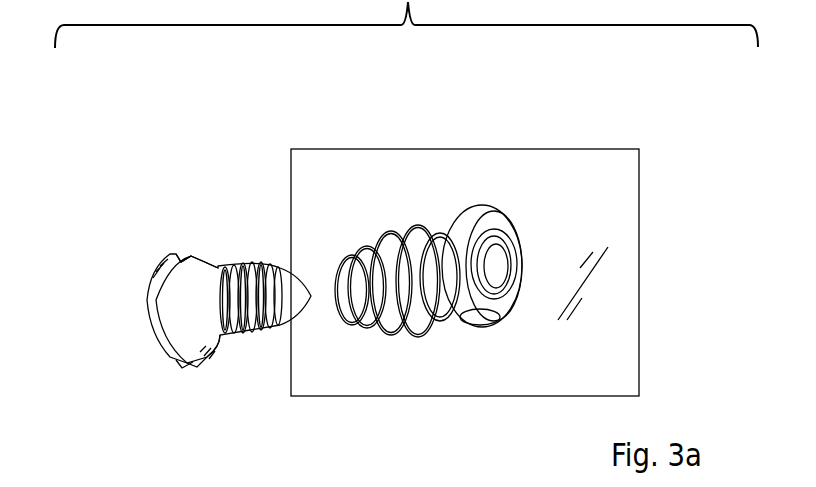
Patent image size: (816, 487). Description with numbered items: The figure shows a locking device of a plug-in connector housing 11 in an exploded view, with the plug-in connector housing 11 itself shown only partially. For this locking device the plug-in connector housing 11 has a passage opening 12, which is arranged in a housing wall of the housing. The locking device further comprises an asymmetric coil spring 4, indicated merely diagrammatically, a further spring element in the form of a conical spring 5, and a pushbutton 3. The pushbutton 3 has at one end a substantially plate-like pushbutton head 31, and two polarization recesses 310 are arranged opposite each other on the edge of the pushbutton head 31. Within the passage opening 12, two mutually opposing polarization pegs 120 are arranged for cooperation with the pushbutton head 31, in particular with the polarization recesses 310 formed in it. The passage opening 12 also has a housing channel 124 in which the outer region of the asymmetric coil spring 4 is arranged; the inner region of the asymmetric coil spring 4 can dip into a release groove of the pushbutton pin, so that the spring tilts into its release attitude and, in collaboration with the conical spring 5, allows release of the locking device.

The pushbutton 3 is at (181, 271).
The pushbutton head 31 is at (162, 318).
The polarization recesses 310 is at (188, 262).
The plug-in connector housing 11 is at (310, 195).
The conical spring 5 is at (372, 237).
The asymmetric coil spring 4 is at (434, 230).
The passage opening 12 is at (452, 271).
The housing channel 124 is at (497, 257).
The polarization pegs 120 is at (458, 327).